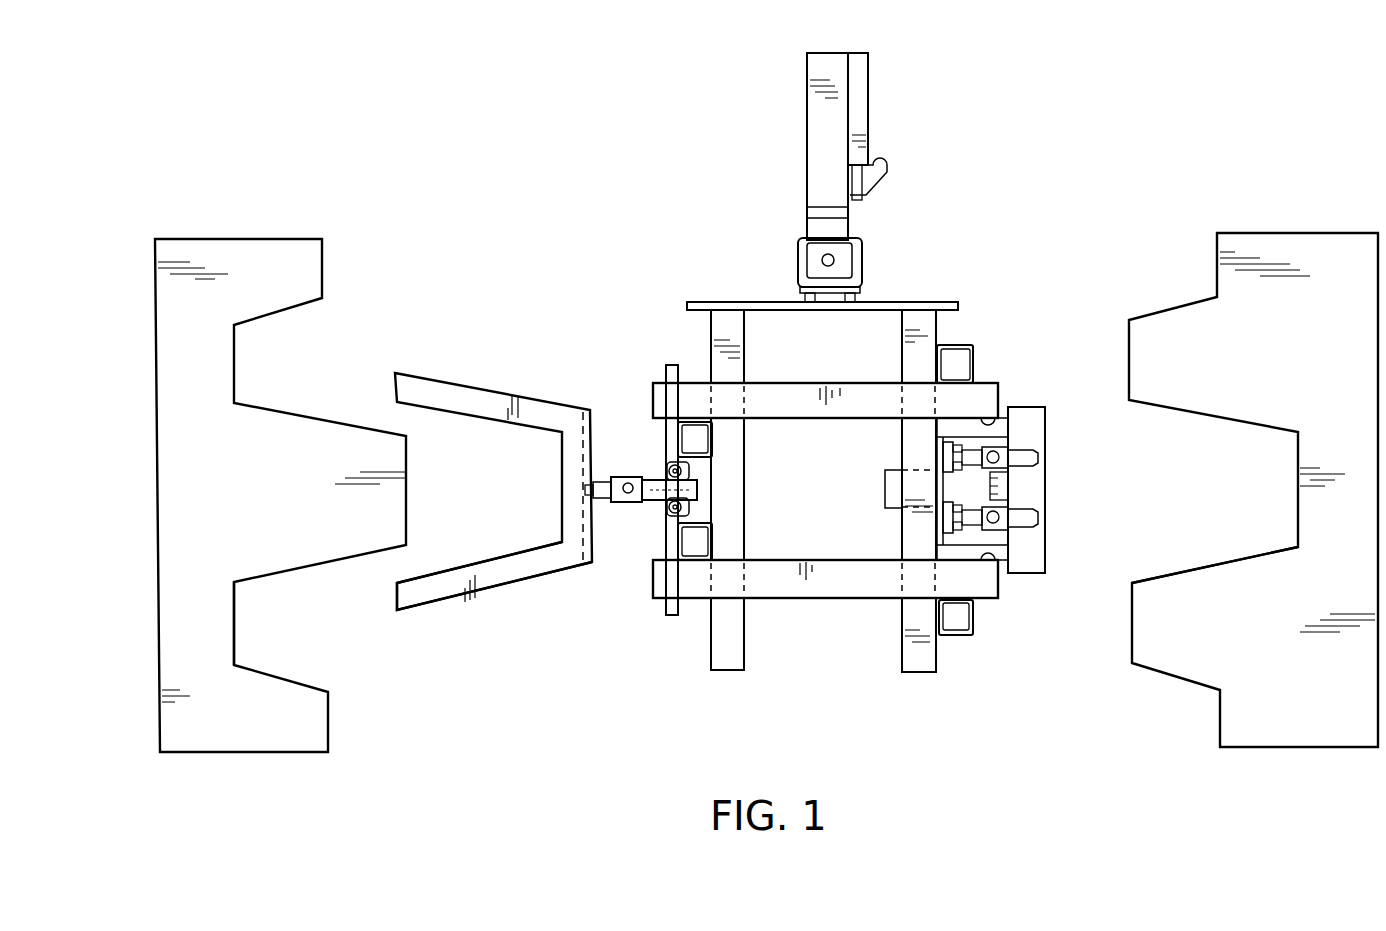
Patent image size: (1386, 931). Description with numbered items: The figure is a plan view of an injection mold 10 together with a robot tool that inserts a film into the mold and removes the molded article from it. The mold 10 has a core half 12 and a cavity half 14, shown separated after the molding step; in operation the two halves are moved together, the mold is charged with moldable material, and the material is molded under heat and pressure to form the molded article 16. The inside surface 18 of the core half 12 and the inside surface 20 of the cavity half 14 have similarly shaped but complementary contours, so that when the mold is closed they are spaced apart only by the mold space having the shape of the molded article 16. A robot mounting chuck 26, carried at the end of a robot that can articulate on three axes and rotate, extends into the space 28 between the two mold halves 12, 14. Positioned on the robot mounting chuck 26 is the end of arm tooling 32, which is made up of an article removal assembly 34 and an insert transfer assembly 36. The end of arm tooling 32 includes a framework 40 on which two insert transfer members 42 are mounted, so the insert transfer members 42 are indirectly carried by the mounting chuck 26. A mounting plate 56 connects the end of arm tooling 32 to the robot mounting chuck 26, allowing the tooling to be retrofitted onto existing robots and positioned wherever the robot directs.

The injection mold 10 is at (452, 172).
The core half 12 is at (214, 232).
The cavity half 14 is at (1244, 226).
The molded article 16 is at (468, 372).
The inside surface 18 is at (236, 616).
The inside surface 20 is at (1217, 562).
The robot mounting chuck 26 is at (863, 253).
The space 28 is at (470, 642).
The end of arm tooling 32 is at (982, 302).
The article removal assembly 34 is at (622, 565).
The insert transfer assembly 36 is at (1018, 604).
The framework 40 is at (712, 642).
The insert transfer members 42 is at (1000, 383).
The mounting plate 56 is at (755, 300).